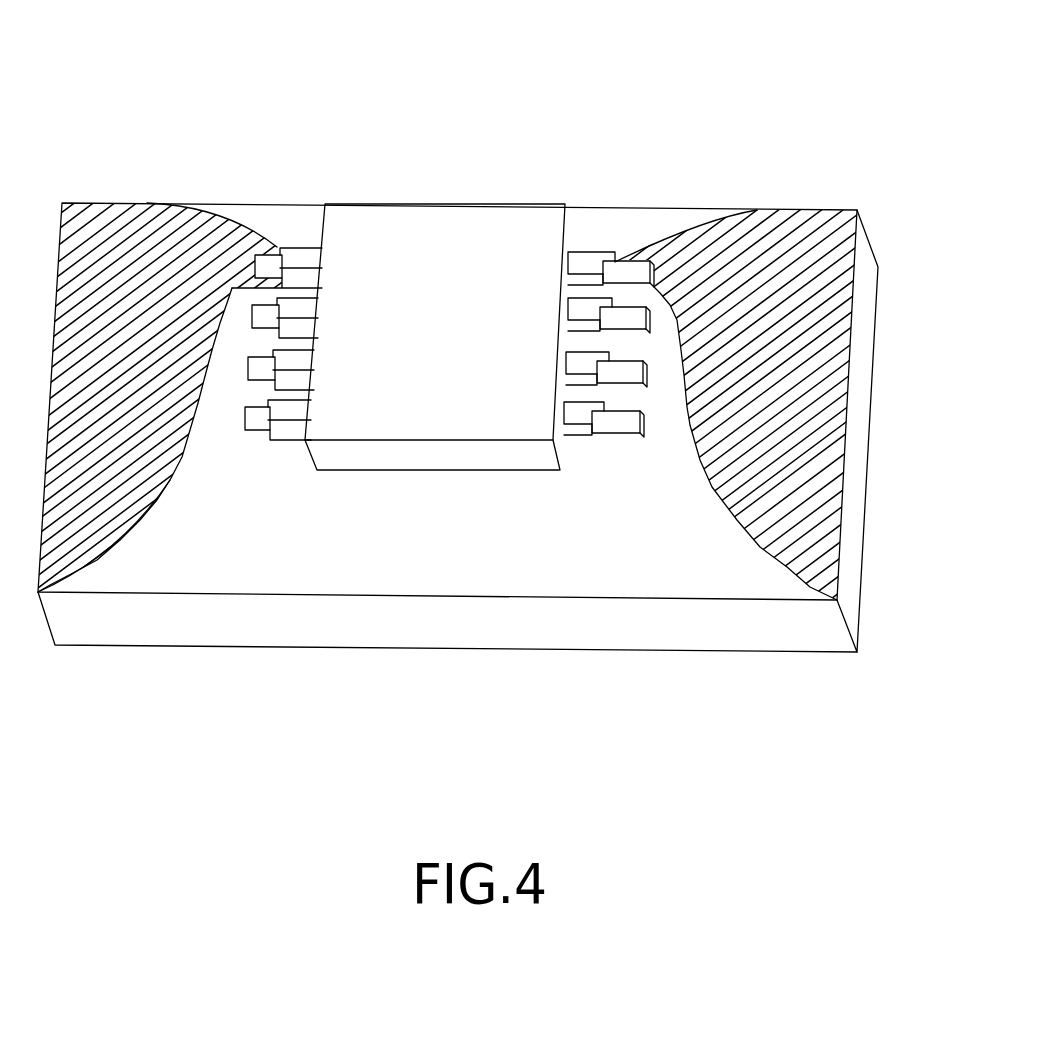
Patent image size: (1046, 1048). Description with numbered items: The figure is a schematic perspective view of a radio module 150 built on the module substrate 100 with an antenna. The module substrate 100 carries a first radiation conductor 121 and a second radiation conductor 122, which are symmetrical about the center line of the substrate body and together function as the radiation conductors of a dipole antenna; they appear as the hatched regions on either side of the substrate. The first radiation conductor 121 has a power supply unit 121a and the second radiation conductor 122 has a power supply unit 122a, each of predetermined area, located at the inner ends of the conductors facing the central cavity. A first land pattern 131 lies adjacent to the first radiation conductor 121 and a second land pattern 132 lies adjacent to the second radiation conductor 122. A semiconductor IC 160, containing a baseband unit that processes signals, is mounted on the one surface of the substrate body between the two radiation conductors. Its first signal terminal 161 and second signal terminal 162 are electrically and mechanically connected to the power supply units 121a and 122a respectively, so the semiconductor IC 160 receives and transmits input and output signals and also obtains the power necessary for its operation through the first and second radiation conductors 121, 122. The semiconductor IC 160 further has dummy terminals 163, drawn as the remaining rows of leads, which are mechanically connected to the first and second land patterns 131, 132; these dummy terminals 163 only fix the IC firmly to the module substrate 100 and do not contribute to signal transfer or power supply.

The module substrate with an antenna 100 is at (682, 633).
The first radiation conductor 121 is at (793, 212).
The power supply unit 121a is at (638, 231).
The second radiation conductor 122 is at (148, 204).
The power supply unit 122a is at (275, 231).
The first land pattern 131 is at (644, 428).
The second land pattern 132 is at (243, 420).
The radio module 150 is at (753, 37).
The semiconductor IC 160 is at (437, 210).
The first signal terminal 161 is at (590, 257).
The second signal terminal 162 is at (297, 253).
The dummy terminals 163 is at (303, 310).